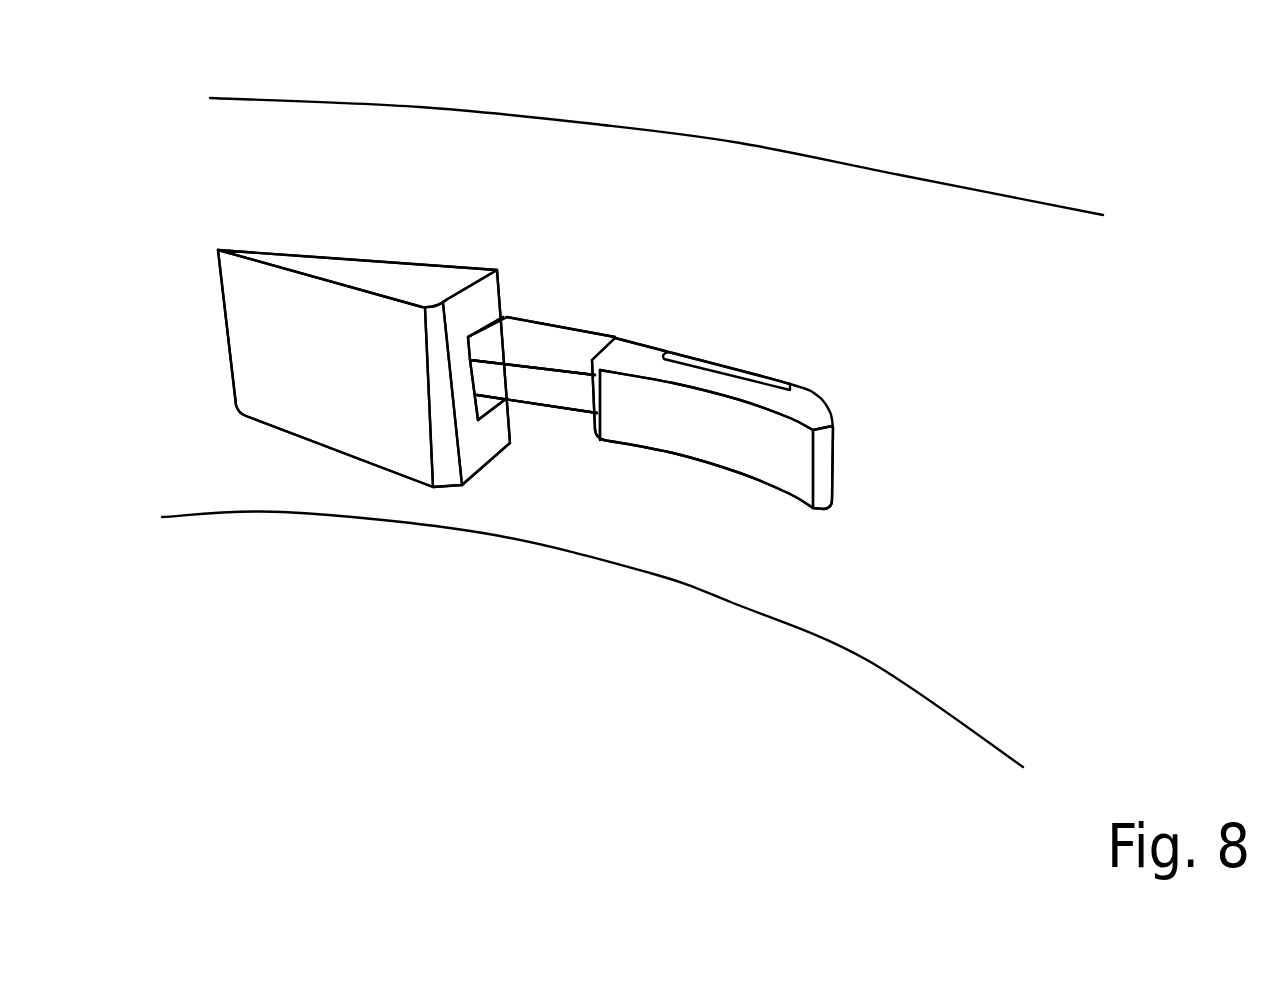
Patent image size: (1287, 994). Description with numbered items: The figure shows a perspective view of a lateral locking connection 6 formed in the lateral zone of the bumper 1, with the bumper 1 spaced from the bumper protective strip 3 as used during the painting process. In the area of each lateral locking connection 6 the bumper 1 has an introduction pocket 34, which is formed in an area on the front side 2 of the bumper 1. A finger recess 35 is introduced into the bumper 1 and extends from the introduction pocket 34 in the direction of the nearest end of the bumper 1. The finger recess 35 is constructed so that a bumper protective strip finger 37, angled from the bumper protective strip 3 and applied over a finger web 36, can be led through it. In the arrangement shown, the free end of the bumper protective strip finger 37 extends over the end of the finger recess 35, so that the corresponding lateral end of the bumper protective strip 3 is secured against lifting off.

The bumper 1 is at (652, 210).
The front side 2 is at (952, 159).
The bumper protective strip 3 is at (545, 368).
The lateral locking connection 6 is at (510, 216).
The introduction pocket 34 is at (360, 382).
The finger recess 35 is at (578, 360).
The finger web 36 is at (635, 348).
The bumper protective strip finger 37 is at (723, 432).